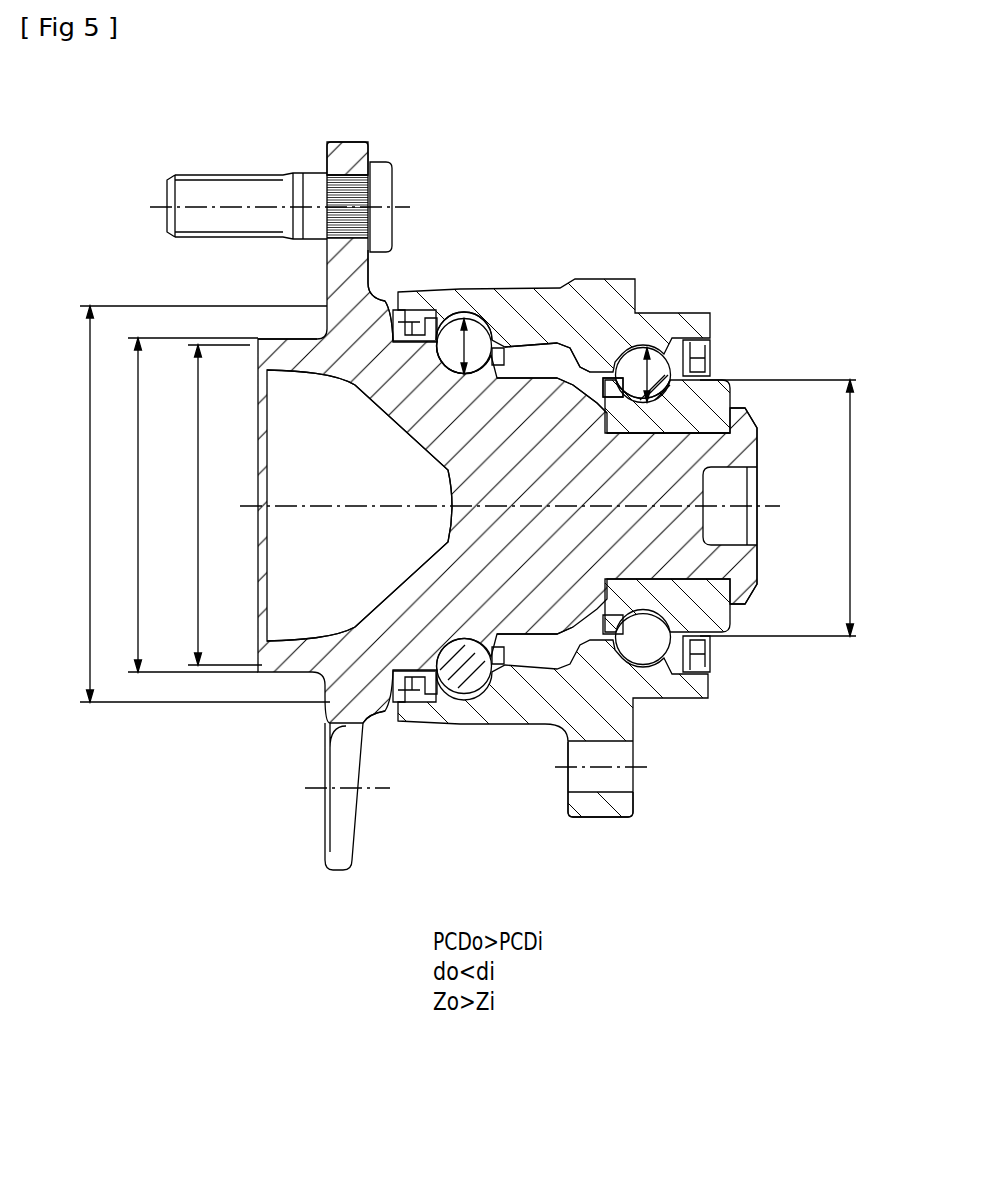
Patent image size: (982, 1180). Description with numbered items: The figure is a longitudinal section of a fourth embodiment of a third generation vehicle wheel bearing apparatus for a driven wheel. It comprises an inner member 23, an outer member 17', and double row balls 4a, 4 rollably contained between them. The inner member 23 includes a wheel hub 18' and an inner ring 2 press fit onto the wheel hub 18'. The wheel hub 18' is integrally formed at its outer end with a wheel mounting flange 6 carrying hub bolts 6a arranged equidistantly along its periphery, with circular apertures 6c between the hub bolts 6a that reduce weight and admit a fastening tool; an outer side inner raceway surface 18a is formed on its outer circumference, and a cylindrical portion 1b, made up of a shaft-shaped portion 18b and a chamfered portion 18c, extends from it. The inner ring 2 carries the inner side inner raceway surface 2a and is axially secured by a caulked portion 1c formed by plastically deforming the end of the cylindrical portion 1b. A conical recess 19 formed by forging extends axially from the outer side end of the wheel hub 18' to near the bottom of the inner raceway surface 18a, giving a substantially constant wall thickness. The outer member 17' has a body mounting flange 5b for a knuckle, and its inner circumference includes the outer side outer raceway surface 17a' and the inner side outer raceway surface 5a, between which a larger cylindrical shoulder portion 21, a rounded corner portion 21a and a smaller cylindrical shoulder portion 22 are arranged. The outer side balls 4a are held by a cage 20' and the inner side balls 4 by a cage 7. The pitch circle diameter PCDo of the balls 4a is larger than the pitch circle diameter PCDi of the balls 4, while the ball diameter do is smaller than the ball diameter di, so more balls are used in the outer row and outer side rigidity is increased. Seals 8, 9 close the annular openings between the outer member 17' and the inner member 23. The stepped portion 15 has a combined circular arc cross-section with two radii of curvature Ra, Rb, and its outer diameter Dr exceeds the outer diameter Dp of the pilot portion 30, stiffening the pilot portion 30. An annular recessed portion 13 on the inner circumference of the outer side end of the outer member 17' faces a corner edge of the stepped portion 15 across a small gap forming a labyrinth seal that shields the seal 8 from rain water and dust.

The wheel mounting flange 6 is at (340, 152).
The hub bolts 6a is at (240, 190).
The circular apertures 6c is at (330, 742).
The stepped portion 15 is at (383, 282).
The pilot portion 30 is at (307, 337).
The seal 8 is at (328, 703).
The wheel hub 18' is at (283, 385).
The inner member 23 is at (388, 413).
The conical recess 19 is at (395, 590).
The caulked portion 1c is at (740, 435).
The cylindrical portion 1b is at (692, 425).
The inner raceway surface 18a is at (469, 372).
The shaft-shaped portion 18b is at (527, 372).
The chamfered portion 18c is at (590, 387).
The lower inner raceway portion 20' is at (535, 578).
The outer member 17' is at (554, 267).
The outboard outer raceway 17a' is at (476, 273).
The larger cylindrical shoulder portion 21 is at (515, 345).
The rounded corner portion 21a is at (565, 350).
The smaller cylindrical shoulder portion 22 is at (606, 385).
The inner ring 2 is at (700, 398).
The inner raceway surface 2a is at (660, 402).
The cage 7 is at (625, 615).
The balls 4 is at (648, 648).
The balls 4a is at (467, 692).
The annular recessed portion 13 is at (412, 330).
The outer raceway surface 5a is at (697, 345).
The seal 9 is at (712, 655).
The body mounting flange 5b is at (598, 810).
The ball diameter do is at (464, 369).
The ball diameter di is at (618, 412).
The radius of curvature Ra is at (377, 292).
The radius of curvature Rb is at (386, 307).
The outer diameter of stepped portion Dr is at (194, 504).
The outer diameter of pilot portion Dp is at (181, 505).
The pitch circle diameter PCDo is at (201, 505).
The pitch circle diameter PCDi is at (778, 508).